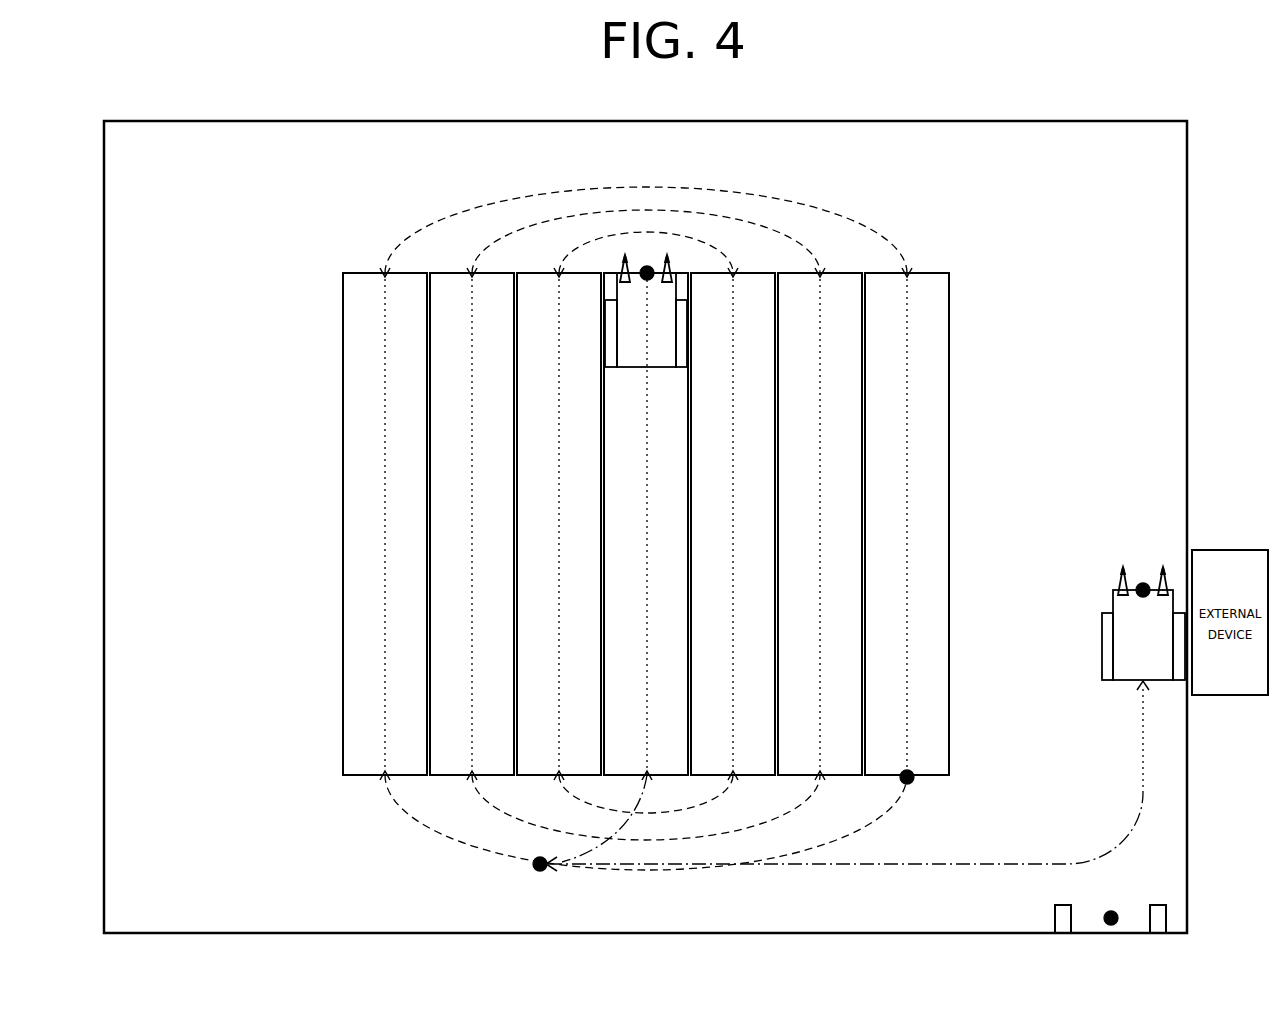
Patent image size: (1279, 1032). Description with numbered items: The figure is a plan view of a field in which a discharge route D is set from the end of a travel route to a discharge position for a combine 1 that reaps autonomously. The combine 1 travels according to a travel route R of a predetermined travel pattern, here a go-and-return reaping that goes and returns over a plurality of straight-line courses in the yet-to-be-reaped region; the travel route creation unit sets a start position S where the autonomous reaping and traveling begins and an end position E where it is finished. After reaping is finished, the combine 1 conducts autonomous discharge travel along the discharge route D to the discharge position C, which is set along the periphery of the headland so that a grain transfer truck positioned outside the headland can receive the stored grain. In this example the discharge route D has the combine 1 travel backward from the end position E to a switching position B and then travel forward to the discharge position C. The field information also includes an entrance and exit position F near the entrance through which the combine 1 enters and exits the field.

The combine 1 is at (608, 277).
The end position E is at (645, 268).
The discharge position C is at (1141, 587).
The travel route R is at (385, 357).
The start position S is at (913, 775).
The discharge route D is at (953, 862).
The switching position B is at (535, 868).
The entrance and exit position F is at (1111, 911).